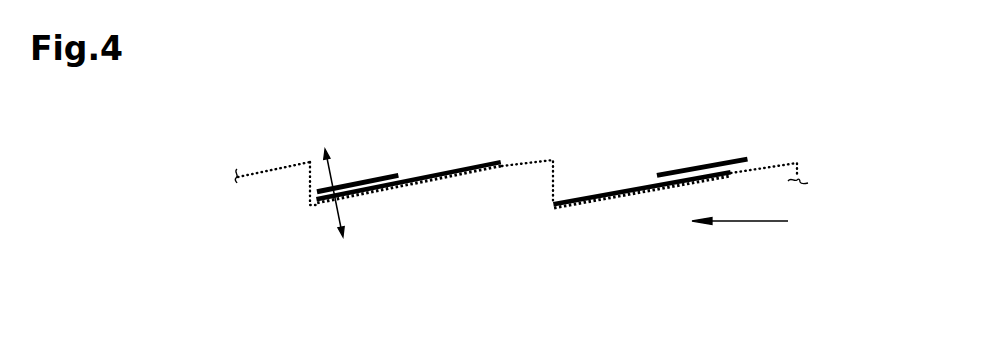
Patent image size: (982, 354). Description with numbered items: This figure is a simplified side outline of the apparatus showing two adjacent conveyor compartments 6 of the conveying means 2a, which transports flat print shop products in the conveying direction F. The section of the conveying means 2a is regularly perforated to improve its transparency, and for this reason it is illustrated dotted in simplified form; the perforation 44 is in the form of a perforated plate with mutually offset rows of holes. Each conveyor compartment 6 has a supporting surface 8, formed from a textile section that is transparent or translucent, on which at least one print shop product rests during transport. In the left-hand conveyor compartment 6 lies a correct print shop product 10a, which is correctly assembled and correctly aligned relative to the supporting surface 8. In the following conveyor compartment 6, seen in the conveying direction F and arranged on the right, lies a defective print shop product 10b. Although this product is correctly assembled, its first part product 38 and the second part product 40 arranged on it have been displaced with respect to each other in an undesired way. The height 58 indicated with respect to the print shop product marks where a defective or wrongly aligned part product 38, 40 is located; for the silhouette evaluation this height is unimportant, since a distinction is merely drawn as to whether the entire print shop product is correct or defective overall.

The conveying means 2a is at (251, 164).
The perforation 44 is at (262, 178).
The correct print shop product 10a is at (407, 187).
The defective print shop product 10b is at (642, 200).
The conveyor compartment 6 is at (398, 152).
The second part product 40 is at (363, 178).
The first part product 38 is at (467, 170).
The supporting surface 8 is at (523, 163).
The height 58 is at (340, 217).
The conveying direction F is at (738, 221).